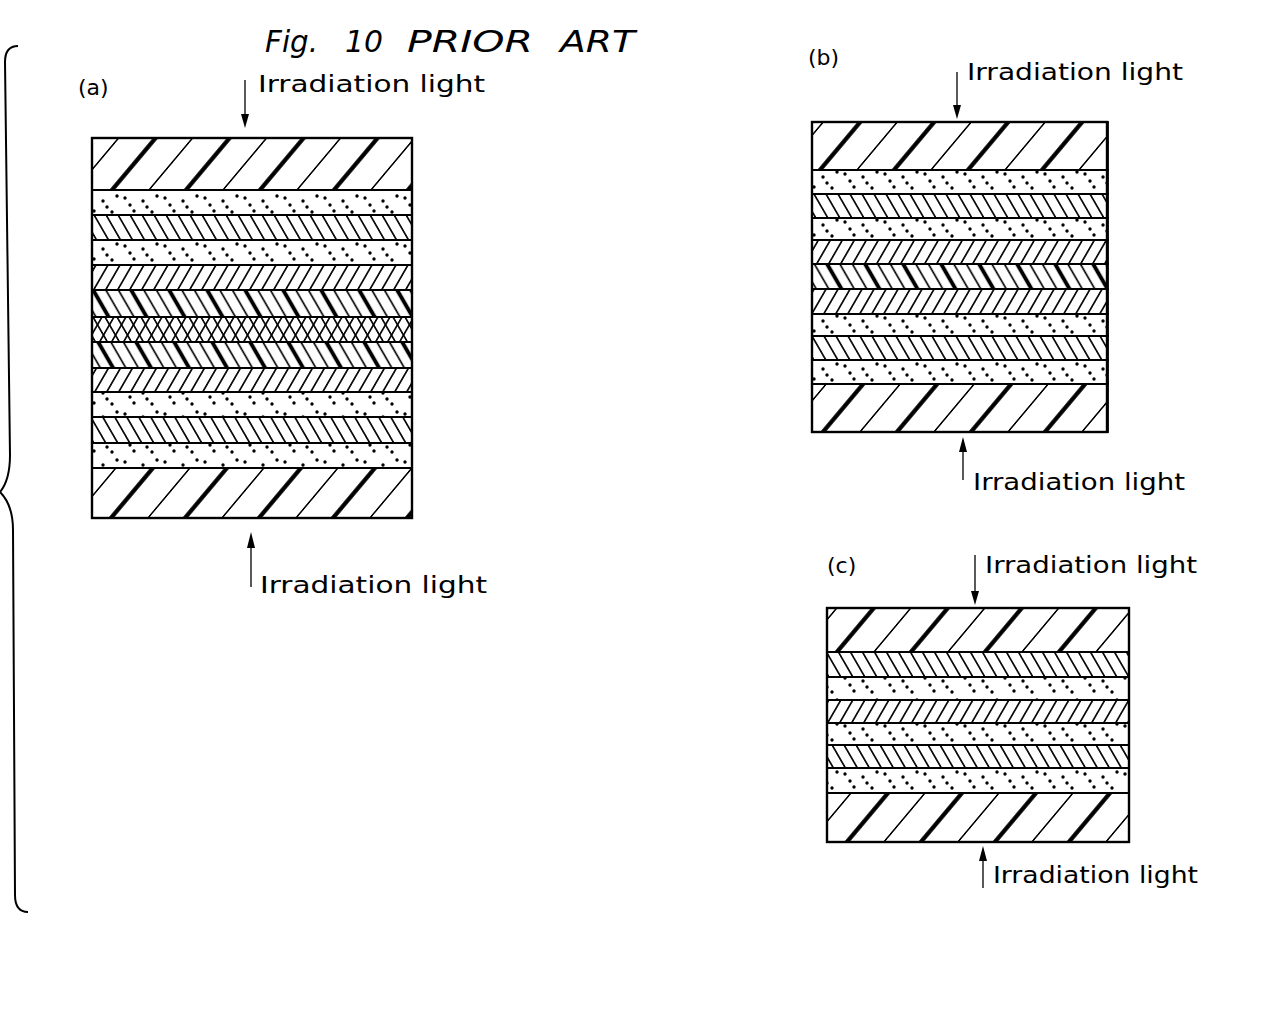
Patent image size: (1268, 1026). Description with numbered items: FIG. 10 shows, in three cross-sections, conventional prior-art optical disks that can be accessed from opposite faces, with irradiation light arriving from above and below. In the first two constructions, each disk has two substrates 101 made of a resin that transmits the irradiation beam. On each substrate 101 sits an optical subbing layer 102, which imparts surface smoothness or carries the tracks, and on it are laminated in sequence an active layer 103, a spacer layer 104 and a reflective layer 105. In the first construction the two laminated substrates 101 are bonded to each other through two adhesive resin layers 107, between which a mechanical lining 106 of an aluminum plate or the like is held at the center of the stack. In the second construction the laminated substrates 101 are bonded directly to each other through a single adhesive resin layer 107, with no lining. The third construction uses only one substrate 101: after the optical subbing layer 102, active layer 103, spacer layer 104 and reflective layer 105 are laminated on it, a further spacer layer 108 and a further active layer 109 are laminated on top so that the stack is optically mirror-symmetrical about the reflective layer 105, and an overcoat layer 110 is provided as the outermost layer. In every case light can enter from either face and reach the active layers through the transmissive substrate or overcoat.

The substrate 101 is at (400, 166).
The optical subbing layer 102 is at (400, 202).
The active layer 103 is at (400, 228).
The spacer layer 104 is at (398, 252).
The reflective layer 105 is at (400, 278).
The mechanical lining 106 is at (400, 328).
The adhesive resin layer 107 is at (400, 303).
The spacer layer 108 is at (1110, 688).
The active layer 109 is at (1110, 665).
The overcoat layer 110 is at (1110, 630).